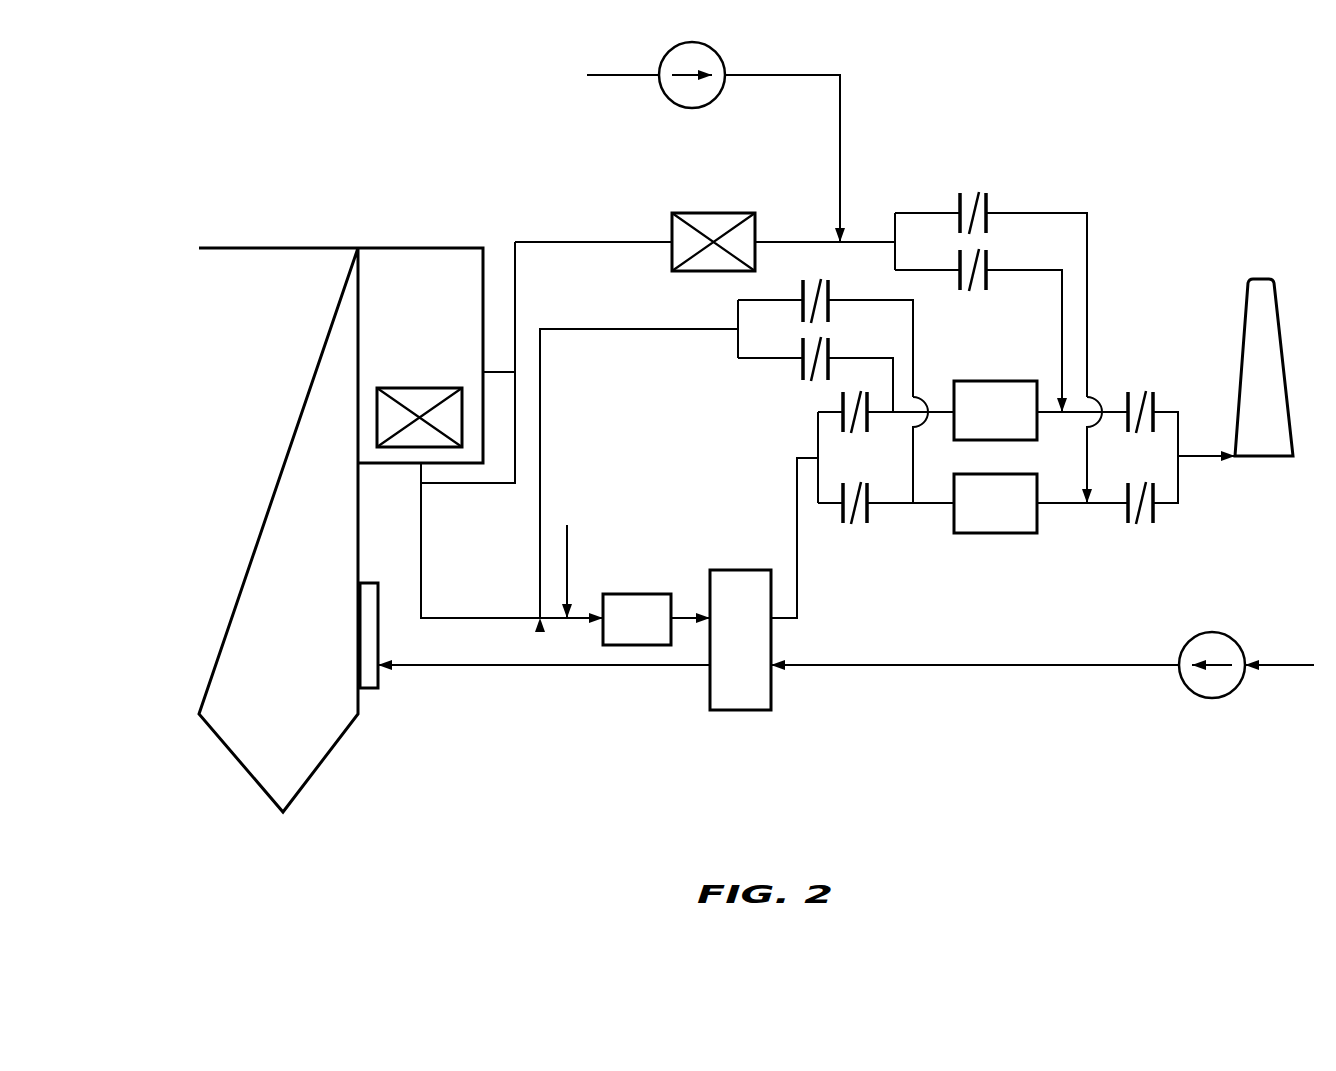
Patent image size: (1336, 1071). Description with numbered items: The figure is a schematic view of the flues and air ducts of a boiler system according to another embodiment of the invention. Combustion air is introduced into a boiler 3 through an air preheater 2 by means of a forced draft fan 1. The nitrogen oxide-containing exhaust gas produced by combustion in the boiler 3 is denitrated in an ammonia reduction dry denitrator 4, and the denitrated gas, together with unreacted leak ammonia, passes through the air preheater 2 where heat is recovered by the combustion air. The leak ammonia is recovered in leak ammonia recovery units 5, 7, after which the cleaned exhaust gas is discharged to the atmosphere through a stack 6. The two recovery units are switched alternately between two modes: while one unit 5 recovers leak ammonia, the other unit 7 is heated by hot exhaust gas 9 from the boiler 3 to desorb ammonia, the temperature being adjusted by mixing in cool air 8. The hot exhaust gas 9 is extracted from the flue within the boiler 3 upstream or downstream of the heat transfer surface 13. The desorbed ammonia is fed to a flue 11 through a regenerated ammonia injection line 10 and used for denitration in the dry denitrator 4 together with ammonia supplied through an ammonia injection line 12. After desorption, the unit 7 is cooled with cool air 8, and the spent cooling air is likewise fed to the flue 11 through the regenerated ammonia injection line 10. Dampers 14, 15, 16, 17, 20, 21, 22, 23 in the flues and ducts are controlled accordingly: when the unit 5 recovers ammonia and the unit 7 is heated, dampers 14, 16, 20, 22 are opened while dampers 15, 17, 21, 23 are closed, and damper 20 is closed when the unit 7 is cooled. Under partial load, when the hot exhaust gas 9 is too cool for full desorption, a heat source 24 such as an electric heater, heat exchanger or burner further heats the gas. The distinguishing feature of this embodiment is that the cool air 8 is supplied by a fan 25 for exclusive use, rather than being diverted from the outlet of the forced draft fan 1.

The forced draft fan 1 is at (1233, 640).
The air preheater 2 is at (730, 711).
The boiler 3 is at (362, 262).
The ammonia reduction dry denitrator 4 is at (628, 594).
The leak ammonia recovery unit 5 is at (985, 533).
The stack 6 is at (1278, 458).
The leak ammonia recovery unit 7 is at (990, 381).
The cool air 8 is at (841, 126).
The hot exhaust gas 9 is at (585, 242).
The regenerated ammonia injection line 10 is at (700, 328).
The flue 11 is at (552, 622).
The ammonia injection line 12 is at (569, 555).
The heat transfer surface 13 is at (422, 387).
The damper 14 is at (842, 520).
The damper 15 is at (860, 438).
The damper 16 is at (1125, 522).
The damper 17 is at (1156, 392).
The damper 20 is at (993, 258).
The damper 21 is at (993, 200).
The damper 22 is at (798, 366).
The damper 23 is at (798, 308).
The heat source 24 is at (732, 213).
The fan 25 is at (714, 50).